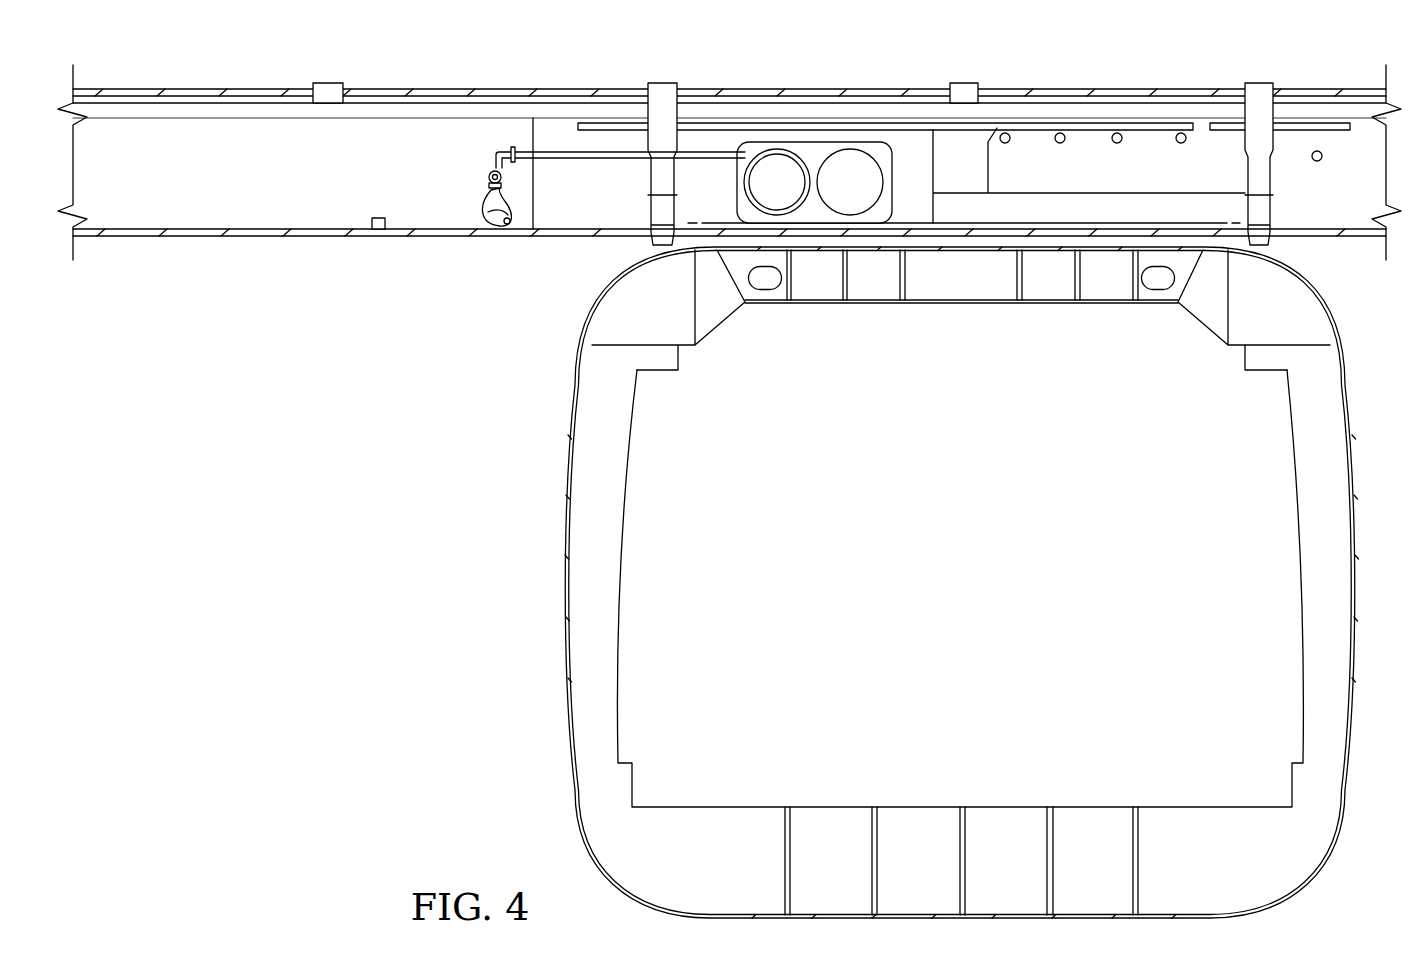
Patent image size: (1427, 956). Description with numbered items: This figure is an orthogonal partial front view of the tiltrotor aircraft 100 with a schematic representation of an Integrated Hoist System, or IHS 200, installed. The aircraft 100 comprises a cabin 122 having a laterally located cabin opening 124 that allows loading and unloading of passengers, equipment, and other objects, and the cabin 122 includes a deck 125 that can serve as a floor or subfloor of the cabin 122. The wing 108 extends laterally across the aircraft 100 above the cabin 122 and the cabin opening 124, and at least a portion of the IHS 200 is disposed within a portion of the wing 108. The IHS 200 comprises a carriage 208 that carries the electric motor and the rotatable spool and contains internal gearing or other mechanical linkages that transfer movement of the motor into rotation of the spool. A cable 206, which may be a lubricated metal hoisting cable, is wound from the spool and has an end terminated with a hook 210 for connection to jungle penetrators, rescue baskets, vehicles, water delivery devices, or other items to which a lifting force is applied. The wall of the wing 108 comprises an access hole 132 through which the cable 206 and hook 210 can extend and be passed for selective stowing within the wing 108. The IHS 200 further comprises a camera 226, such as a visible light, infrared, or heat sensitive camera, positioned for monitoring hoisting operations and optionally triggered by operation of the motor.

The tiltrotor aircraft 100 is at (871, 582).
The wing 108 is at (188, 142).
The cabin 122 is at (942, 550).
The cabin opening 124 is at (567, 602).
The deck 125 is at (1097, 807).
The access hole 132 is at (467, 234).
The Integrated Hoist System 200 is at (667, 129).
The cable 206 is at (496, 147).
The carriage 208 is at (812, 147).
The hook 210 is at (485, 210).
The camera 226 is at (377, 218).